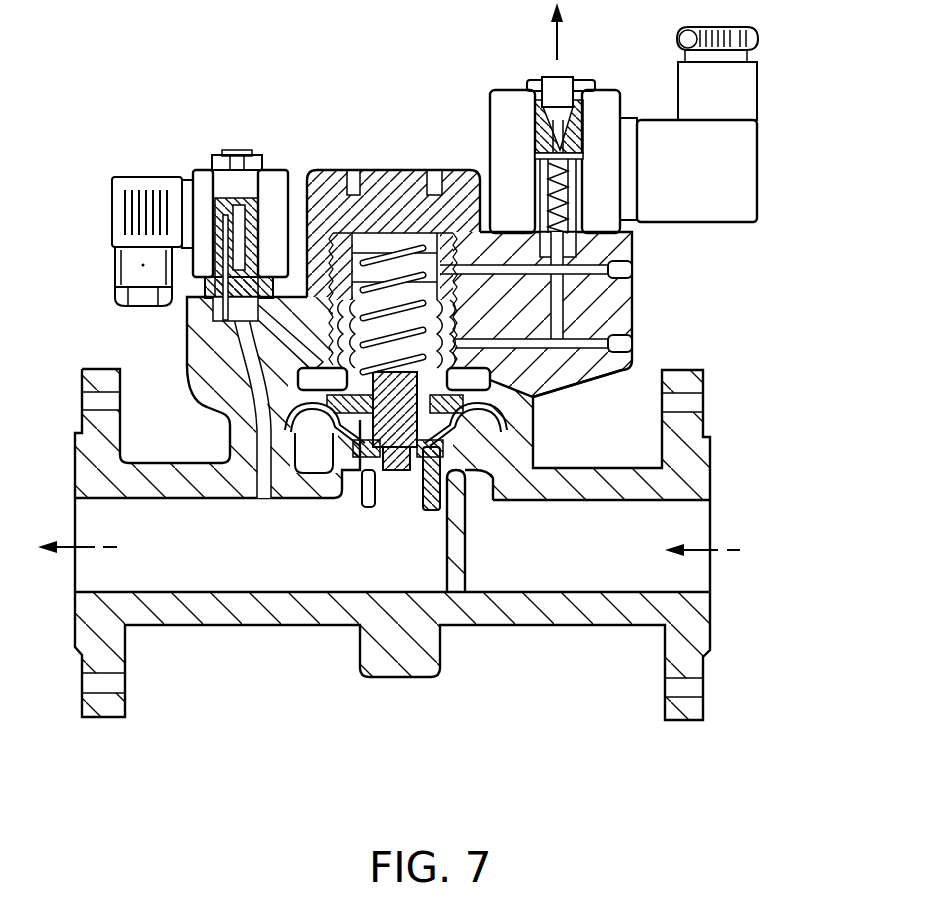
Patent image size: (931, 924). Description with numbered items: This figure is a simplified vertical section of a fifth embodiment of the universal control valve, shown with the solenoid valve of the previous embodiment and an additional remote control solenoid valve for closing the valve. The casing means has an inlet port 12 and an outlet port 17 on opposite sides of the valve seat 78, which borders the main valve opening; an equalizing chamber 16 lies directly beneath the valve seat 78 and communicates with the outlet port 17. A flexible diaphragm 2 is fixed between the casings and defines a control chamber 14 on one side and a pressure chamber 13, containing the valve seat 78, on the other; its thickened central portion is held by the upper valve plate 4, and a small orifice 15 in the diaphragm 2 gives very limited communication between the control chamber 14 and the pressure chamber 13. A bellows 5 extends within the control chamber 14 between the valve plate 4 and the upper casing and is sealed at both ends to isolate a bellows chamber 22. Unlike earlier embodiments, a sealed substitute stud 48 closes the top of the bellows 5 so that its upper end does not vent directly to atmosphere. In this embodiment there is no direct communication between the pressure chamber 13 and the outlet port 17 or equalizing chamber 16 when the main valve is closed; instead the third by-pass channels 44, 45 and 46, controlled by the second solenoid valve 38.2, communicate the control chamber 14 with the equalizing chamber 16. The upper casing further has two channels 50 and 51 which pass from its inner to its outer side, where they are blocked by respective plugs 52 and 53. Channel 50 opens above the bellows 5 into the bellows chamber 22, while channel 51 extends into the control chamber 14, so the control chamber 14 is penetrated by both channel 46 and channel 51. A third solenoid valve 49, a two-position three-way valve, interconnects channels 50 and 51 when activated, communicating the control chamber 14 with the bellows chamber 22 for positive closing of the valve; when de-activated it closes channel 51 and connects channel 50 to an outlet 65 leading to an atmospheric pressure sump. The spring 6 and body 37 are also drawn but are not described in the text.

The flexible diaphragm 2 is at (518, 498).
The upper valve plate 4 is at (393, 447).
The bellows 5 is at (457, 358).
The spring 6 is at (389, 257).
The inlet port 12 is at (655, 537).
The pressure chamber 13 is at (337, 500).
The control chamber 14 is at (322, 386).
The orifice 15 is at (307, 417).
The equalizing chamber 16 is at (400, 562).
The outlet port 17 is at (130, 538).
The bellows chamber 22 is at (400, 297).
The valve body 37 is at (687, 615).
The second solenoid valve 38.2 is at (203, 193).
The channel 44 is at (262, 467).
The channel 45 is at (262, 357).
The channel 46 is at (305, 372).
The substitute stud 48 is at (377, 168).
The third solenoid valve 49 is at (735, 182).
The channel 50 is at (493, 273).
The channel 51 is at (457, 337).
The plug 52 is at (638, 270).
The plug 53 is at (638, 343).
The outlet 65 is at (560, 85).
The valve seat 78 is at (487, 483).